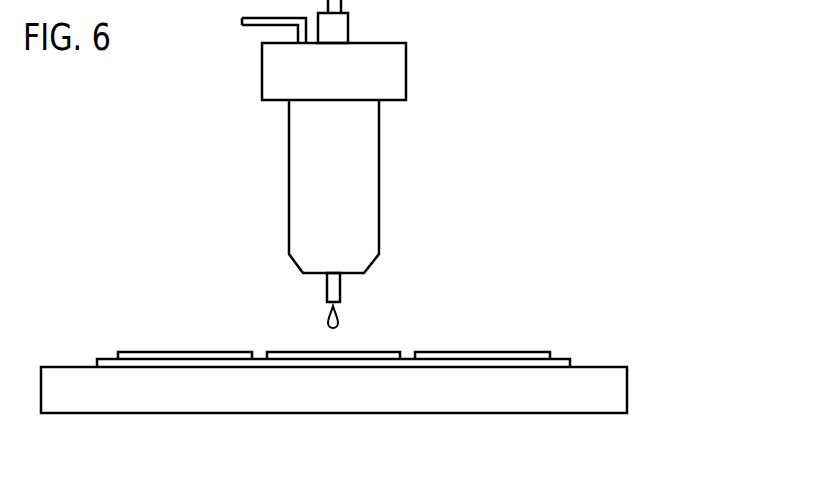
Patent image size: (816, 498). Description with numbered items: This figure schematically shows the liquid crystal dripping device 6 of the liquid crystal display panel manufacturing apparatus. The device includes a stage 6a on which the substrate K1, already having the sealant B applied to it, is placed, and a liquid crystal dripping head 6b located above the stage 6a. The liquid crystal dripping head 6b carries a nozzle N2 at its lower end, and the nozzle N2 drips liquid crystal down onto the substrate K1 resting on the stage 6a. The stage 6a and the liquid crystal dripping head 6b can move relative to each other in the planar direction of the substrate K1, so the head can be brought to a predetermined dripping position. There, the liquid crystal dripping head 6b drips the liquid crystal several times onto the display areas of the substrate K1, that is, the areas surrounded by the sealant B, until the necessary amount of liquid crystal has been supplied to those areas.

The liquid crystal dripping device 6 is at (544, 125).
The stage 6a is at (622, 393).
The liquid crystal dripping head 6b is at (379, 152).
The nozzle N2 is at (340, 288).
The substrate K1 is at (570, 359).
The sealant B is at (177, 355).